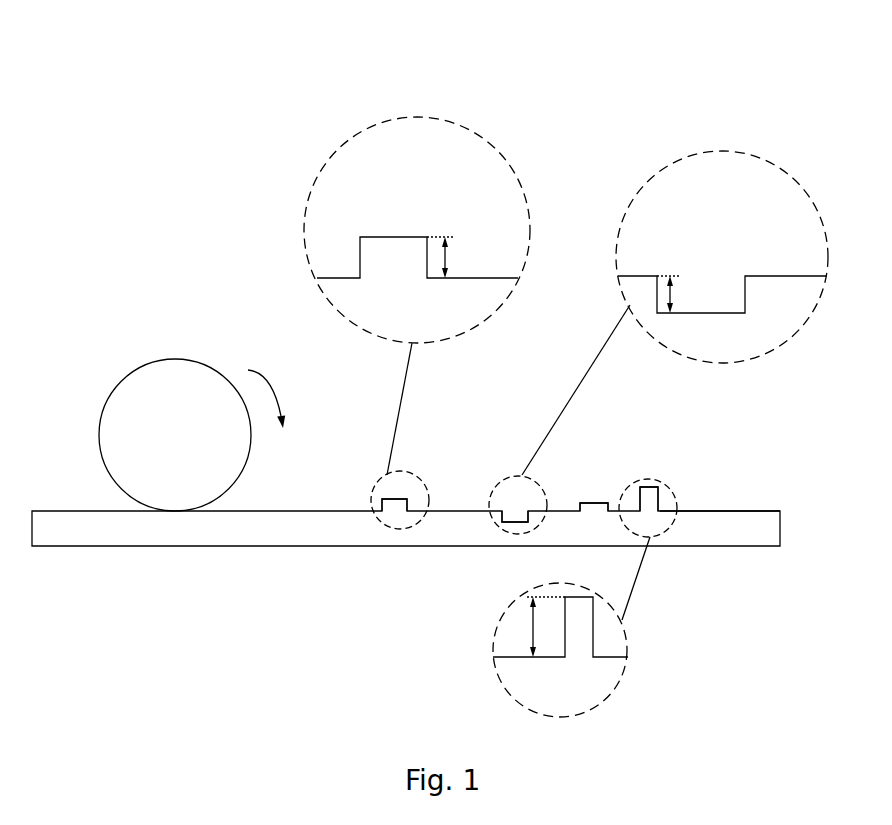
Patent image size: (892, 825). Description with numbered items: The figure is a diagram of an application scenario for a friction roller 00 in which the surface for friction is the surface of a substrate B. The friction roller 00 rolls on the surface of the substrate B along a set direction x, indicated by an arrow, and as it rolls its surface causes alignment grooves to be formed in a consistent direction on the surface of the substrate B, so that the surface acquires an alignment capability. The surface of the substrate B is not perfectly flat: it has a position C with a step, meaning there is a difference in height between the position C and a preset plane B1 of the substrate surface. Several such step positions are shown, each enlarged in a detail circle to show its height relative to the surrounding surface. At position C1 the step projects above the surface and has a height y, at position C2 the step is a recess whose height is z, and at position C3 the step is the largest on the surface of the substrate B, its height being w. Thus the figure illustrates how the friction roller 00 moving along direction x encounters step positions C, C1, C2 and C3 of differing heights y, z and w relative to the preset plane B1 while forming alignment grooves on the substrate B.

The friction roller 00 is at (193, 360).
The set direction x is at (271, 399).
The substrate B is at (780, 527).
The preset plane B1 is at (722, 504).
The position with a step C is at (585, 503).
The position C1 is at (388, 237).
The position C2 is at (702, 313).
The position C3 is at (660, 490).
The height of the step at position C1 y is at (445, 257).
The height of the step at position C2 z is at (673, 294).
The height of the step at position C3 w is at (546, 627).